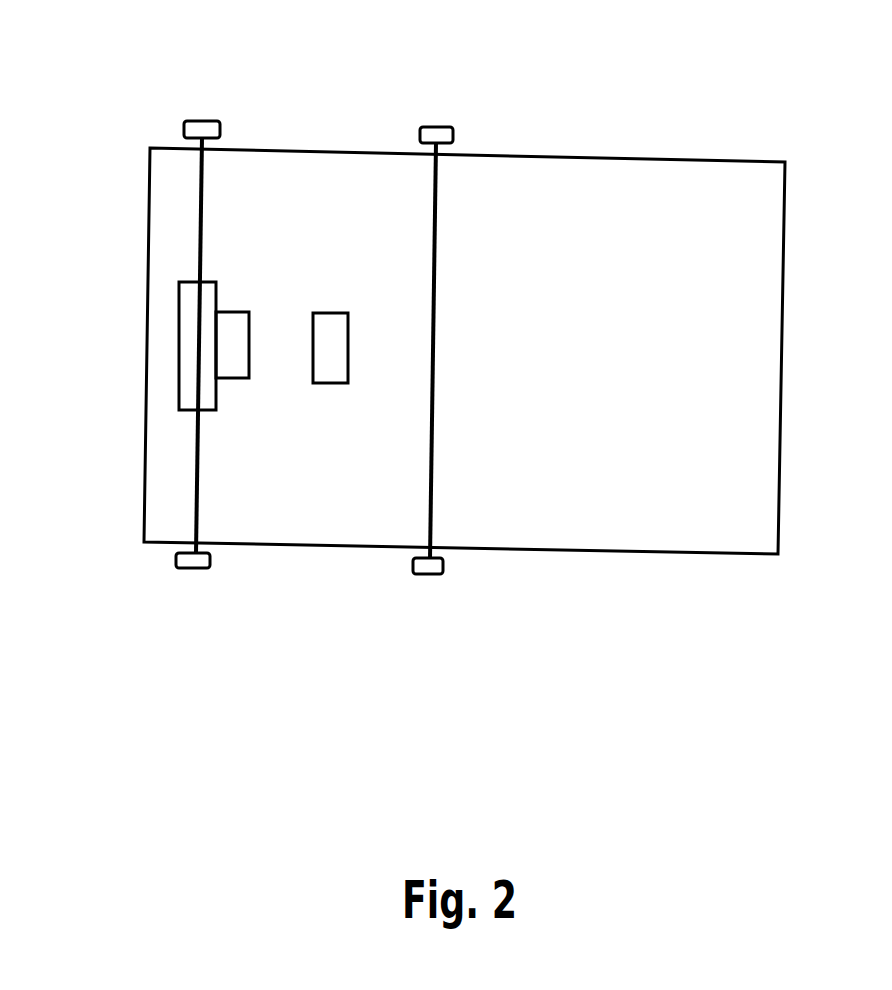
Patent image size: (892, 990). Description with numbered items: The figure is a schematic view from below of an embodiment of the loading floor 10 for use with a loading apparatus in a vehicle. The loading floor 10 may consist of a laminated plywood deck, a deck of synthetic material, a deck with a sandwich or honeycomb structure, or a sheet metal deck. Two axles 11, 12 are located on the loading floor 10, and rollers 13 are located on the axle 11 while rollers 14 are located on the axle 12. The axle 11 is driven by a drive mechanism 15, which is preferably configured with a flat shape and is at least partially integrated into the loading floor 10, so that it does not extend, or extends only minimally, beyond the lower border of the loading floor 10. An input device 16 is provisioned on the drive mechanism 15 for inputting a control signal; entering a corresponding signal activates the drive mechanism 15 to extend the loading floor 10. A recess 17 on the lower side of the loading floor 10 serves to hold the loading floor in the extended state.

The loading floor 10 is at (683, 160).
The axle 11 is at (200, 207).
The axle 12 is at (436, 233).
The rollers 13 is at (209, 121).
The rollers 14 is at (444, 127).
The drive mechanism 15 is at (179, 378).
The input device 16 is at (235, 312).
The recess 17 is at (340, 313).